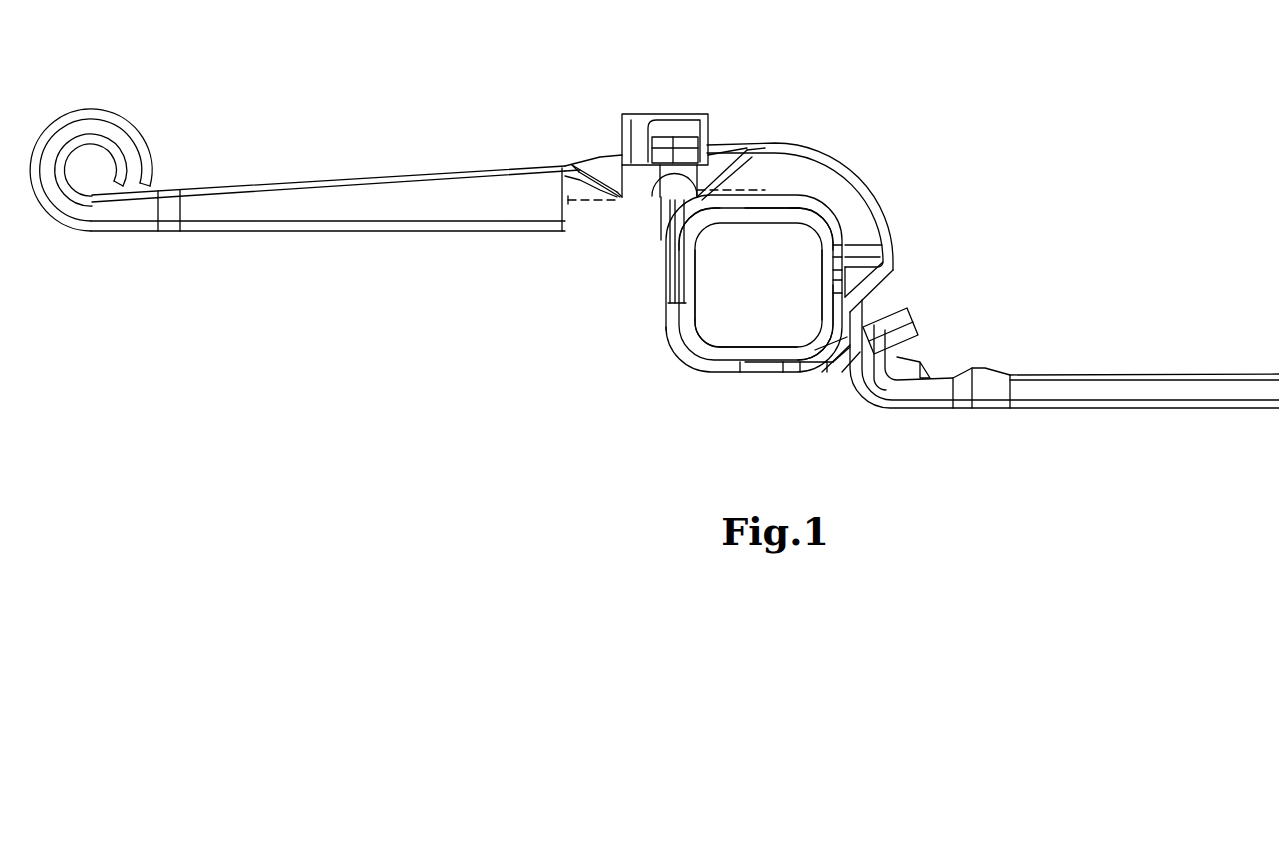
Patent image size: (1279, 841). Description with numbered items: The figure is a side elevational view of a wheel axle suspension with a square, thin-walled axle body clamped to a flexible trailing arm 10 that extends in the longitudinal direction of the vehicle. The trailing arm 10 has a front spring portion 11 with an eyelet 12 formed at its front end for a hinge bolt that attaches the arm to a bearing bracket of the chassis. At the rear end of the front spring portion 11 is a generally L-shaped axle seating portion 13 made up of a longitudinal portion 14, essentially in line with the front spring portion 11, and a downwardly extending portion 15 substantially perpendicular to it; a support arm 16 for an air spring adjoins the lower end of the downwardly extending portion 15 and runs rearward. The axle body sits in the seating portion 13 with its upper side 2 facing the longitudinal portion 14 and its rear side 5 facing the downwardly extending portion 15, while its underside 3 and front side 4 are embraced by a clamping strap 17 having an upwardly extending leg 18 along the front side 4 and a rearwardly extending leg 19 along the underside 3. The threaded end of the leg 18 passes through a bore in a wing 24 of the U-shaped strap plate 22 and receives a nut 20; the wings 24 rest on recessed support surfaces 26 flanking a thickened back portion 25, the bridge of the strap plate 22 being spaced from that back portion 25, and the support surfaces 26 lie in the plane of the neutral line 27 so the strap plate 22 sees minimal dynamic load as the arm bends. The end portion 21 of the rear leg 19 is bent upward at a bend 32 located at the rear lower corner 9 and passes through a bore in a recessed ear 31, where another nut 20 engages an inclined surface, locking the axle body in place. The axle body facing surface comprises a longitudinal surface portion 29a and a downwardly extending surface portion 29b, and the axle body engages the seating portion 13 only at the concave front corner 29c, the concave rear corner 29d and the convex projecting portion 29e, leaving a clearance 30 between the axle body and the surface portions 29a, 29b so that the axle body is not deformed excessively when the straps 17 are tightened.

The trailing arm 10 is at (474, 143).
The front spring portion 11 is at (361, 212).
The eyelet 12 is at (77, 122).
The axle seating portion 13 is at (827, 183).
The longitudinal portion 14 is at (766, 190).
The downwardly extending portion 15 is at (867, 258).
The support arm 16 is at (1160, 386).
The clamping strap 17 is at (672, 375).
The upwardly extending leg 18 is at (663, 321).
The rearwardly extending leg 19 is at (748, 378).
The nut 20 is at (693, 150).
The end portion 21 is at (903, 322).
The strap plate 22 is at (637, 127).
The wings 24 is at (615, 199).
The thickened back portion 25 is at (720, 143).
The recessed support surface 26 is at (616, 188).
The neutral line 27 is at (584, 205).
The longitudinal surface portion 29a is at (781, 212).
The downwardly extending surface portion 29b is at (830, 288).
The front corner 29c is at (705, 208).
The rear corner 29d is at (828, 220).
The projecting portion 29e is at (848, 297).
The clearance 30 is at (773, 208).
The ear 31 is at (865, 353).
The bend 32 is at (807, 378).
The upper side 2 is at (747, 219).
The underside 3 is at (748, 351).
The front side 4 is at (692, 290).
The rear side 5 is at (823, 278).
The rear lower corner 9 is at (695, 337).